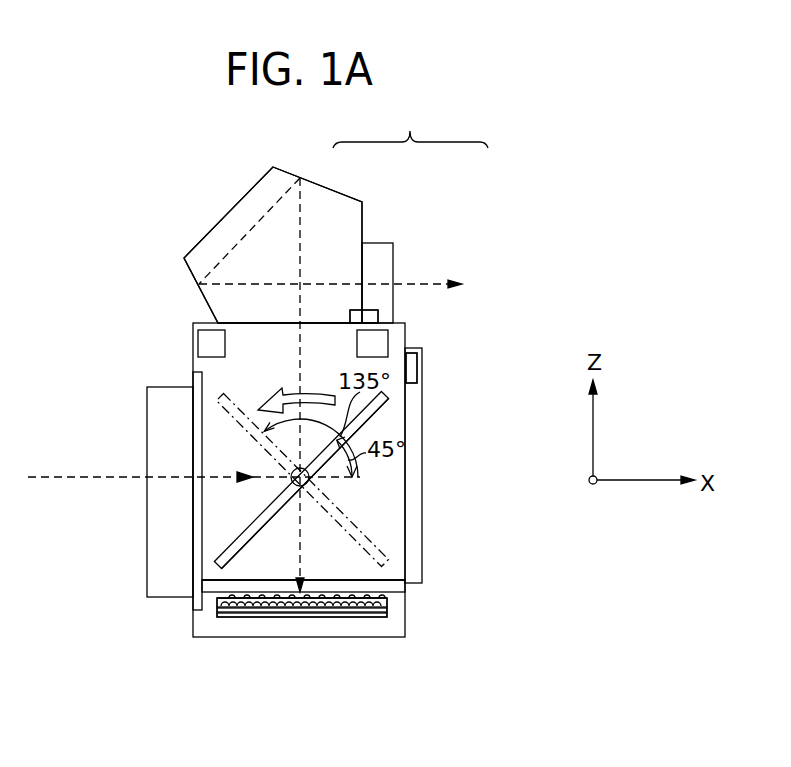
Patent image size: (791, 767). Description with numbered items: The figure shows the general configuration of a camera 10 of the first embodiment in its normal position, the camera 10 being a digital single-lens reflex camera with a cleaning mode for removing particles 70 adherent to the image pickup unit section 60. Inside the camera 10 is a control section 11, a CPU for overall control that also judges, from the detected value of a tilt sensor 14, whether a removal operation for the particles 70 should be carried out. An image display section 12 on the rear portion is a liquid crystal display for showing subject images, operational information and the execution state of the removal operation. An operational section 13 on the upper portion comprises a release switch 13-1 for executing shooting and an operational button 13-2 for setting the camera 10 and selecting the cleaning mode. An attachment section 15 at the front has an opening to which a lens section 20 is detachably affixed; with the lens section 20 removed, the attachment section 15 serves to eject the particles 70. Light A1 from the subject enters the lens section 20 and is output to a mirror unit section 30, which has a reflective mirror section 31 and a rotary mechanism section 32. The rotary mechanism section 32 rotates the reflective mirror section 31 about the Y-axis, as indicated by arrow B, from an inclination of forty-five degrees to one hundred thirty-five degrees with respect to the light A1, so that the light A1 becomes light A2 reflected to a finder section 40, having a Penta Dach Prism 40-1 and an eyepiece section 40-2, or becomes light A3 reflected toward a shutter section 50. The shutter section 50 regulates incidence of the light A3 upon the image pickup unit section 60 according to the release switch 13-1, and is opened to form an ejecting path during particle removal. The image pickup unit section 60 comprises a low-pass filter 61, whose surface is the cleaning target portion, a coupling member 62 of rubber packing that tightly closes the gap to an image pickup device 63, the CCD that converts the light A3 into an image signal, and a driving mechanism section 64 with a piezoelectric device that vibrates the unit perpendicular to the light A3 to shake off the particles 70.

The camera 10 is at (160, 228).
The control section 11 is at (385, 357).
The image display section 12 is at (413, 495).
The operational section 13 is at (515, 287).
The release switch 13-1 is at (380, 306).
The operational button 13-2 is at (412, 350).
The tilt sensor 14 is at (210, 345).
The attachment section 15 is at (197, 410).
The lens section 20 is at (155, 590).
The mirror unit section 30 is at (388, 398).
The reflective mirror section 31 is at (392, 406).
The rotary mechanism section 32 is at (290, 470).
The finder section 40 is at (336, 211).
The Penta Dach Prism 40-1 is at (322, 212).
The eyepiece section 40-2 is at (390, 245).
The shutter section 50 is at (373, 580).
The image pickup unit section 60 is at (480, 592).
The low-pass filter 61 is at (387, 597).
The coupling member 62 is at (387, 605).
The image pickup device 63 is at (387, 610).
The driving mechanism section 64 is at (387, 616).
The particles 70 is at (380, 590).
The light A1 is at (33, 478).
The light A2 is at (297, 342).
The light A3 is at (305, 560).
The arrow B is at (308, 397).